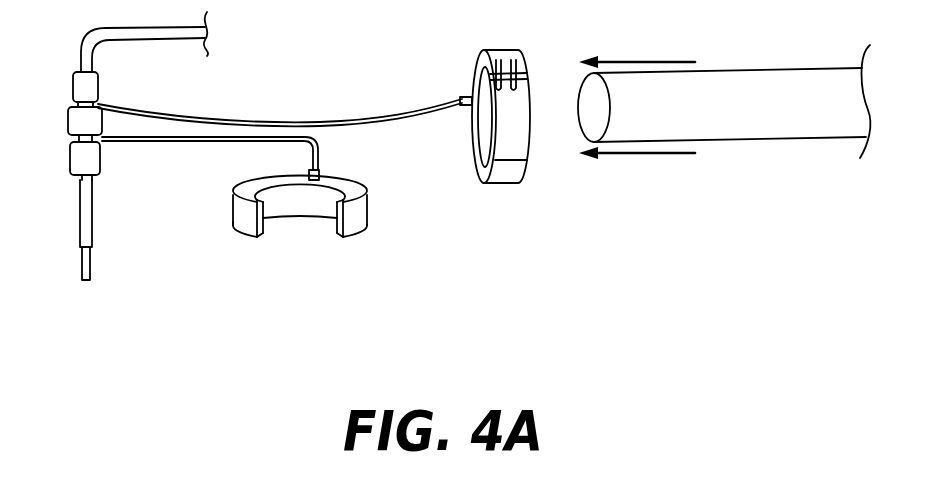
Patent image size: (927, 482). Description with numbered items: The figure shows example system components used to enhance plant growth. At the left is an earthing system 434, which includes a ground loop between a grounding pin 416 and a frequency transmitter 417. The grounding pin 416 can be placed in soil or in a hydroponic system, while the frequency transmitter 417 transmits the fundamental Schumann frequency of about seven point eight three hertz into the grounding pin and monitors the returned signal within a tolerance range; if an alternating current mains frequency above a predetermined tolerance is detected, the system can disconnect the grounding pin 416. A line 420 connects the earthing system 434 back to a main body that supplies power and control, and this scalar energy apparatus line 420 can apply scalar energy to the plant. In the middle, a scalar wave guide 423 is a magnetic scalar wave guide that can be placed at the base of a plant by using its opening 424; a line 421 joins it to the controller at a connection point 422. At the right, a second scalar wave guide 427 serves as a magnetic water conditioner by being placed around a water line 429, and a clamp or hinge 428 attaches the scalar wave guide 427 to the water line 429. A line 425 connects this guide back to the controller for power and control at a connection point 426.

The grounding pin 416 is at (91, 262).
The frequency transmitter 417 is at (93, 210).
The line 420 is at (97, 58).
The line 421 is at (210, 140).
The connection point 422 is at (320, 175).
The scalar wave guide 423 is at (368, 212).
The opening 424 is at (263, 230).
The line 425 is at (312, 102).
The connection point 426 is at (468, 97).
The scalar wave guide 427 is at (527, 175).
The clamp or hinge 428 is at (527, 76).
The water line 429 is at (712, 141).
The earthing system 434 is at (82, 88).